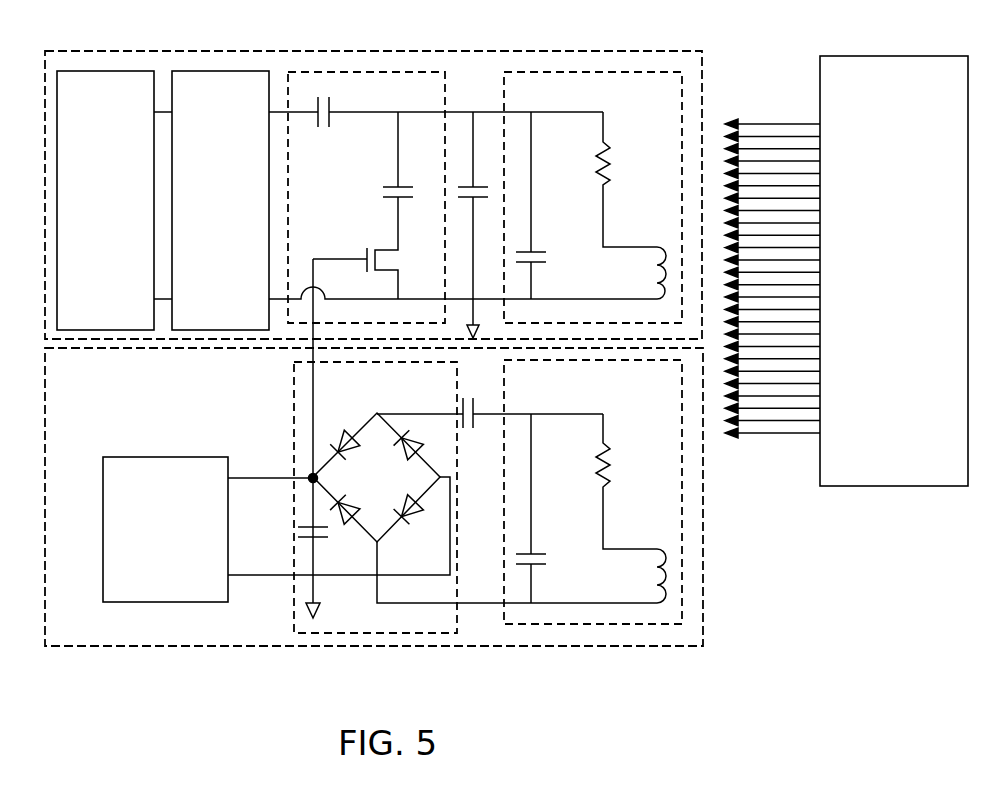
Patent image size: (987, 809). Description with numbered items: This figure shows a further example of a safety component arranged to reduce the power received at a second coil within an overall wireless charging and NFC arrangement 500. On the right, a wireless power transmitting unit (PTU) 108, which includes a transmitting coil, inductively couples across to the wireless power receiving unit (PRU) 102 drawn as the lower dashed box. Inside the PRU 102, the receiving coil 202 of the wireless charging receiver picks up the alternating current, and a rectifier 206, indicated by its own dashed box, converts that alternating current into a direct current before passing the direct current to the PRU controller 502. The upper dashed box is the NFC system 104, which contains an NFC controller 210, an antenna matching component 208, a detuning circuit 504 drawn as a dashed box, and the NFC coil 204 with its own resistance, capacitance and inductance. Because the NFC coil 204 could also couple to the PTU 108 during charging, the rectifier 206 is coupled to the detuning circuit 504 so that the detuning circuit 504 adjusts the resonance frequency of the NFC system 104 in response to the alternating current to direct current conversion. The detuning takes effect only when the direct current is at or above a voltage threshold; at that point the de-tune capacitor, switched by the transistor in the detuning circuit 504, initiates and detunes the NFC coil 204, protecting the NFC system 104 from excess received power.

The wireless charging and NFC system 500 is at (405, 719).
The NFC system 104 is at (230, 50).
The NFC controller 210 is at (125, 252).
The antenna matching component 208 is at (240, 252).
The detuning circuit 504 is at (348, 71).
The Rx coil of the NFC system 204 is at (563, 71).
The wireless power transmitting unit 108 is at (905, 56).
The wireless power receiving unit 102 is at (193, 646).
The PRU controller 502 is at (184, 582).
The rectifier 206 is at (348, 633).
The Rx coil of the wireless PRU 202 is at (555, 624).